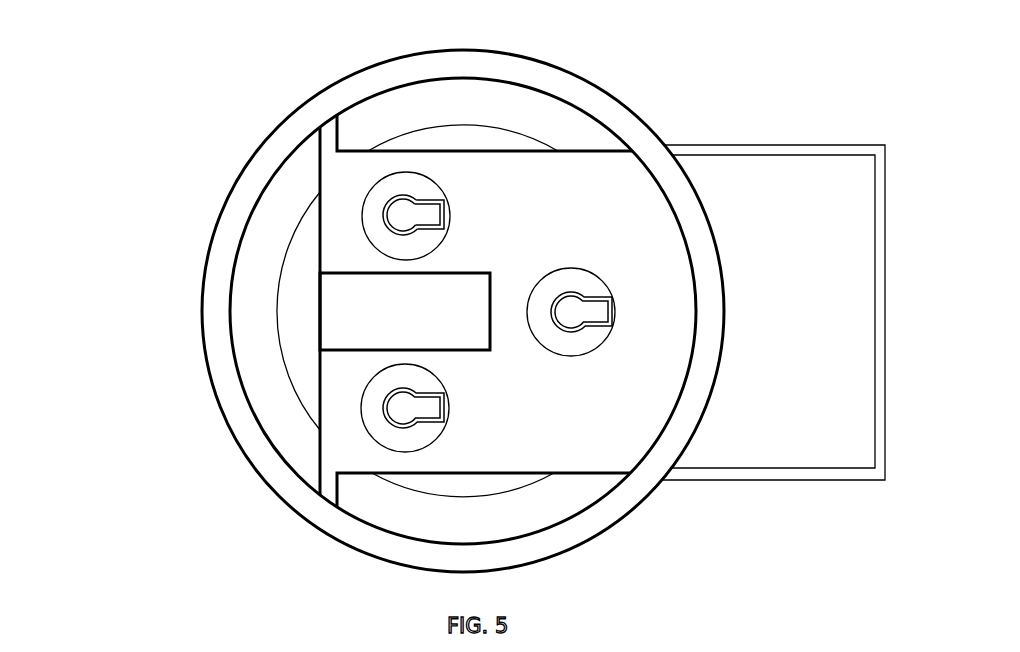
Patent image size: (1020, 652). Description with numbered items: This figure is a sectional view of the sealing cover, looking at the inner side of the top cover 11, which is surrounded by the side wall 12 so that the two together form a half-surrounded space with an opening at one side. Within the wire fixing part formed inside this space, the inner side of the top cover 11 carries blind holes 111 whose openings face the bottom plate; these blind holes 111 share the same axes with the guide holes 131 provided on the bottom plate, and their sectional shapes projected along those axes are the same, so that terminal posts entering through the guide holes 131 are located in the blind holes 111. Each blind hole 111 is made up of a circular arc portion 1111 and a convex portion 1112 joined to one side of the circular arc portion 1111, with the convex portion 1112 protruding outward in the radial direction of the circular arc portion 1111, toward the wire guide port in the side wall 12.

The top cover 11 is at (781, 130).
The side wall 12 is at (195, 220).
The blind holes 111 is at (243, 283).
The circular arc portion 1111 is at (371, 236).
The convex portion 1112 is at (420, 243).
The guide holes 131 is at (433, 165).